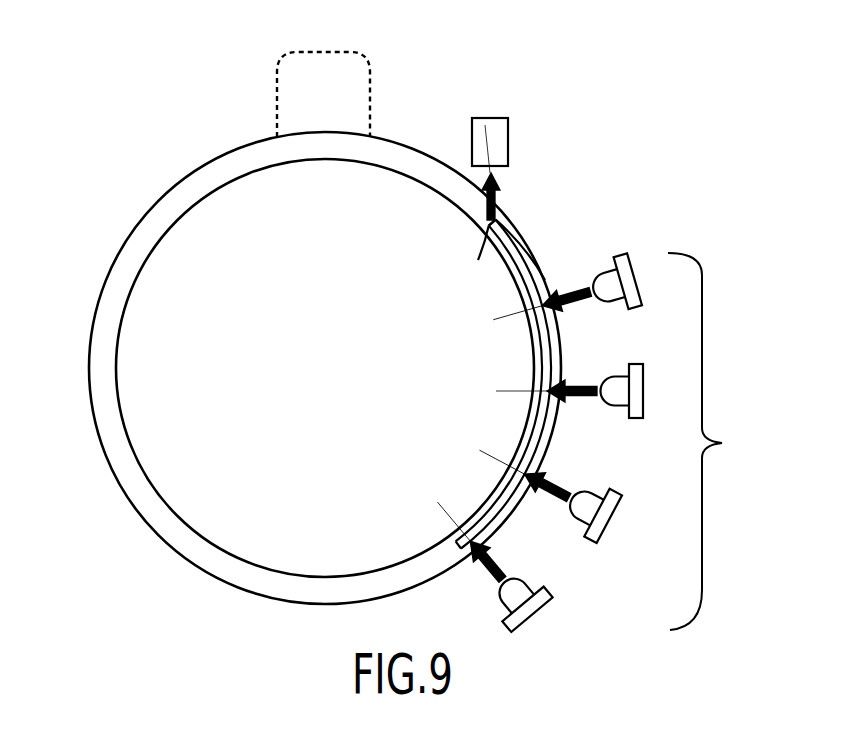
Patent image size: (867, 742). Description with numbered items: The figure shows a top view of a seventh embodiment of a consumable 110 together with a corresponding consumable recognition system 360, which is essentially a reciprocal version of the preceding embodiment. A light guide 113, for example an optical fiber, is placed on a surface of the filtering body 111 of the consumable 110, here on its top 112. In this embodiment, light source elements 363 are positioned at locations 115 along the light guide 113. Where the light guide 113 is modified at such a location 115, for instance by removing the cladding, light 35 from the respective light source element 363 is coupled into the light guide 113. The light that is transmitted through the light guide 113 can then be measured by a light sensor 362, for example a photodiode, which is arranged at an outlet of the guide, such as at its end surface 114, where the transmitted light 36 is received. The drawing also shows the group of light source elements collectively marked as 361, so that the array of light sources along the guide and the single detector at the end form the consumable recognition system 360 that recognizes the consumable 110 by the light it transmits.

The consumable 110 is at (309, 345).
The filtering body 111 is at (155, 203).
The top 112 is at (240, 197).
The light 35 is at (555, 495).
The light guide 113 is at (540, 252).
The end surface 114 is at (498, 217).
The locations 115 is at (560, 397).
The reflected light beam 36 is at (498, 177).
The consumable recognition system 360 is at (608, 128).
The light source array 361 is at (589, 442).
The light sensor 362 is at (490, 120).
The light source elements 363 is at (532, 442).